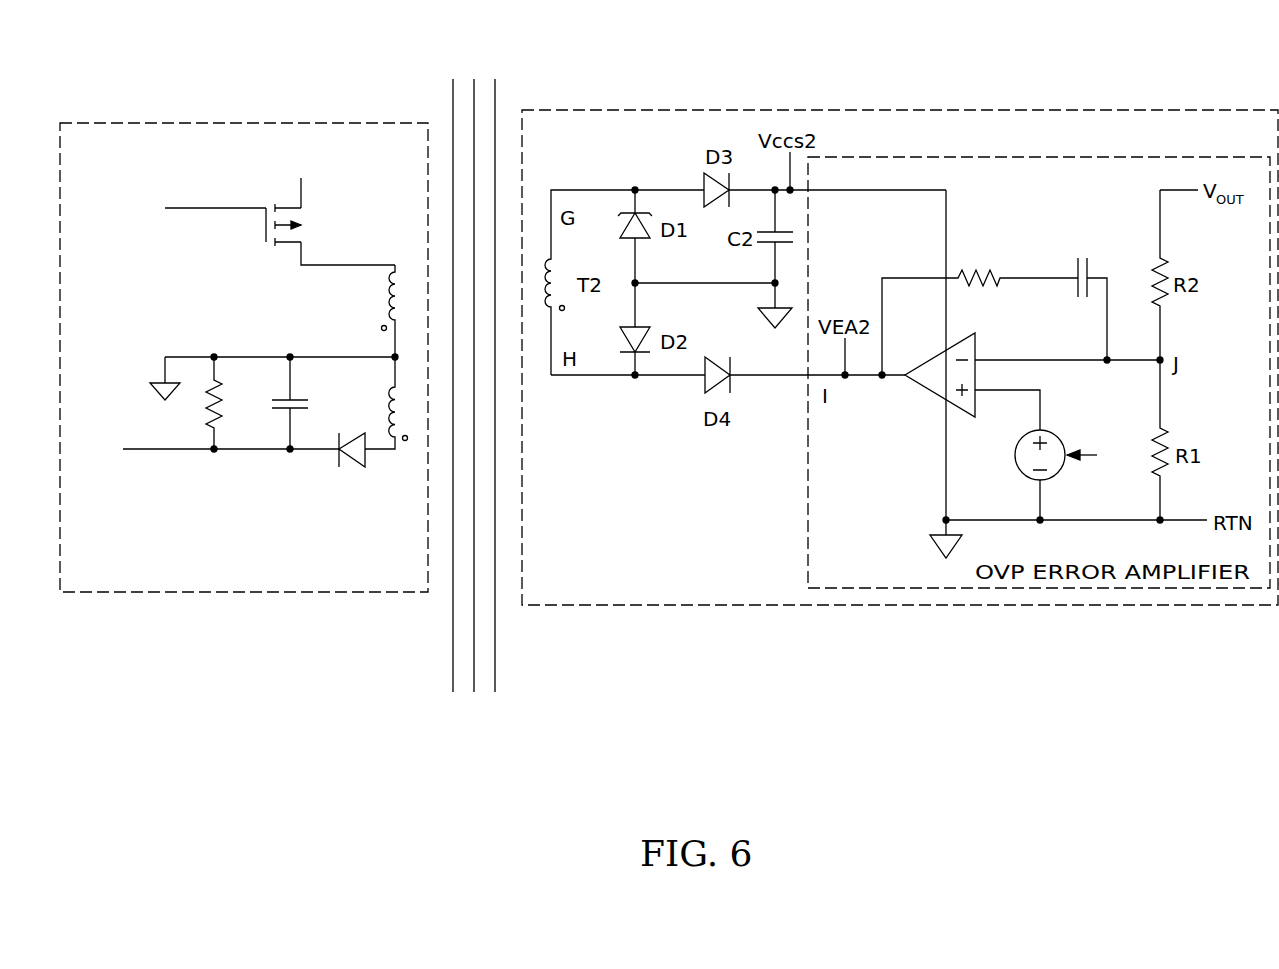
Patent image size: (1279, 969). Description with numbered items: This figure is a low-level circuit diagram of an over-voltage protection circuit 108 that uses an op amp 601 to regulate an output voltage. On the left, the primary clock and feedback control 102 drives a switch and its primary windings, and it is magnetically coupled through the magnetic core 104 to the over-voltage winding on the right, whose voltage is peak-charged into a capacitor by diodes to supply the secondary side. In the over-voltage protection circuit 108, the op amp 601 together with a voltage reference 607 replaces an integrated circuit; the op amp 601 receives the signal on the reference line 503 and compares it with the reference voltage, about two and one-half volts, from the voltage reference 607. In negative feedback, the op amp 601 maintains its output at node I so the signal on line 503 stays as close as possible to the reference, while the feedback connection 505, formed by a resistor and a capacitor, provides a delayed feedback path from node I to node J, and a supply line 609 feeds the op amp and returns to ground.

The primary clock and feedback control 102 is at (244, 124).
The magnetic core 104 is at (453, 638).
The over-voltage protection circuit 108 is at (718, 110).
The feedback connection 505 is at (1125, 228).
The op amp 601 is at (980, 346).
The reference line 503 is at (1084, 360).
The voltage reference 607 is at (1013, 458).
The bias supply line 609 is at (946, 470).